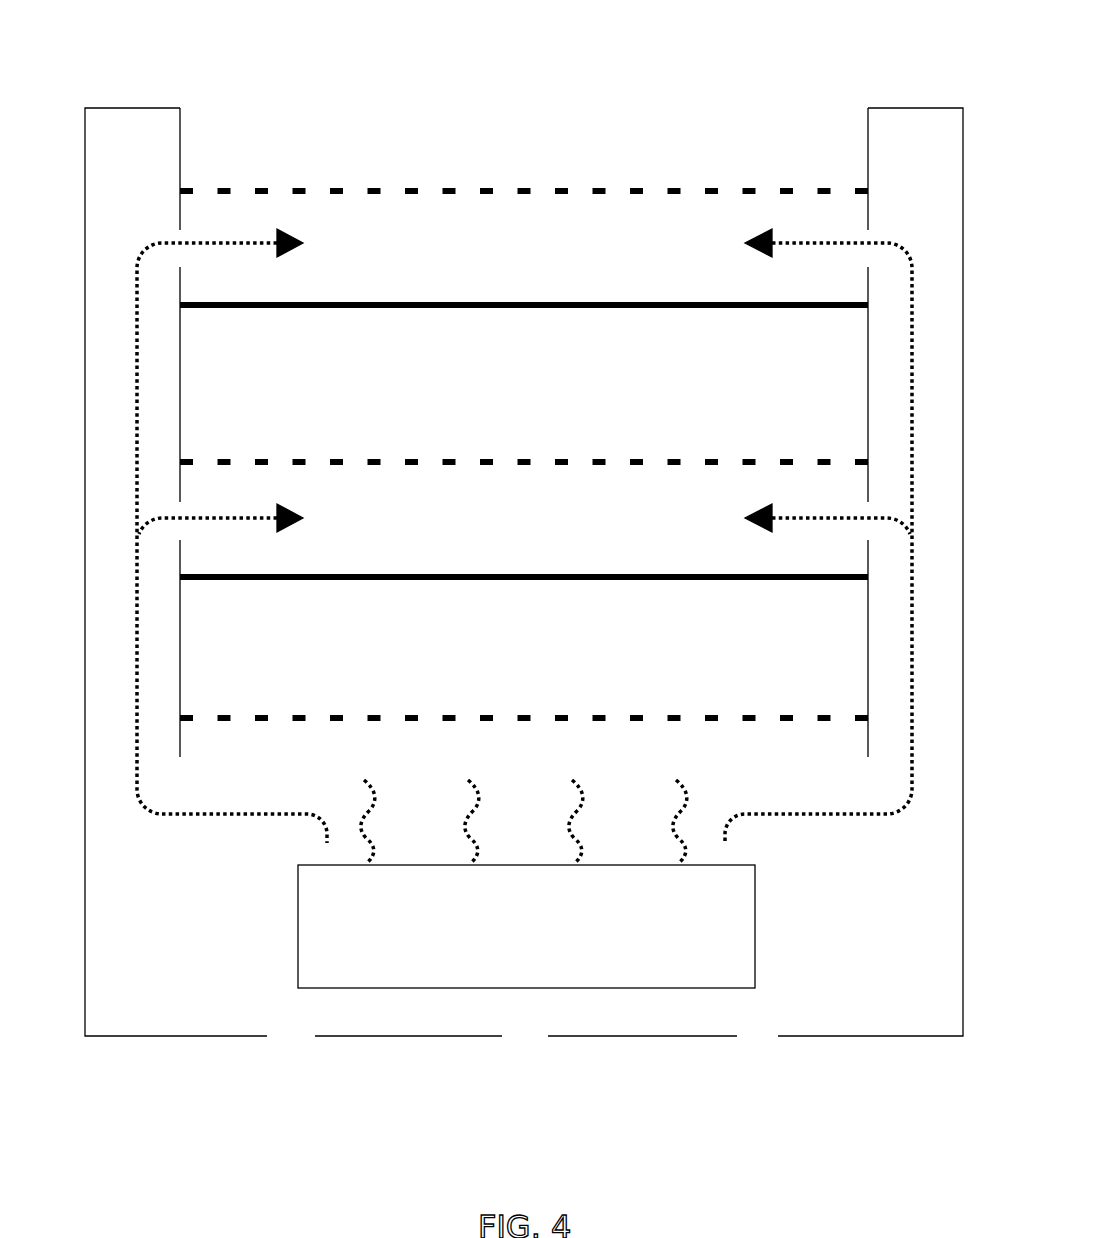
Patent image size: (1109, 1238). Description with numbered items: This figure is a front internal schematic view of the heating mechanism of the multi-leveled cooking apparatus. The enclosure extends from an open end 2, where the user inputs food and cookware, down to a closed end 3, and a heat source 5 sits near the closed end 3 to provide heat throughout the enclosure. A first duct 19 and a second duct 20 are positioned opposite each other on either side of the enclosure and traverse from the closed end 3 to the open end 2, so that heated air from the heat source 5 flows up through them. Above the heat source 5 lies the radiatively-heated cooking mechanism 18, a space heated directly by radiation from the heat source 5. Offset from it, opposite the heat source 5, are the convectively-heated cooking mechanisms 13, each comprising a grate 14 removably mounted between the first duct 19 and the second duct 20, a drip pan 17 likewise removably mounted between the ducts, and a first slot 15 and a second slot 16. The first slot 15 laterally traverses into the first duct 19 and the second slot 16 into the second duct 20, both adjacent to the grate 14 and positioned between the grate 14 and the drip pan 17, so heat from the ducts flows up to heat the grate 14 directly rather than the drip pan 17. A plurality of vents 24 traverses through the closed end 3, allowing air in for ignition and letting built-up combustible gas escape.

The open end 2 is at (235, 50).
The closed end 3 is at (237, 968).
The heat source 5 is at (530, 943).
The convectively-heated cooking mechanism 13 is at (385, 430).
The grate 14 is at (647, 192).
The first slot 15 is at (212, 233).
The second slot 16 is at (840, 230).
The drip pan 17 is at (647, 305).
The radiatively-heated cooking mechanism 18 is at (622, 718).
The first duct 19 is at (146, 165).
The second duct 20 is at (929, 165).
The plurality of vents 24 is at (278, 1060).